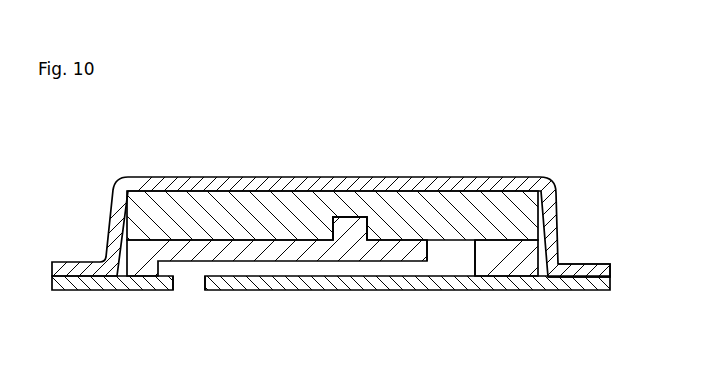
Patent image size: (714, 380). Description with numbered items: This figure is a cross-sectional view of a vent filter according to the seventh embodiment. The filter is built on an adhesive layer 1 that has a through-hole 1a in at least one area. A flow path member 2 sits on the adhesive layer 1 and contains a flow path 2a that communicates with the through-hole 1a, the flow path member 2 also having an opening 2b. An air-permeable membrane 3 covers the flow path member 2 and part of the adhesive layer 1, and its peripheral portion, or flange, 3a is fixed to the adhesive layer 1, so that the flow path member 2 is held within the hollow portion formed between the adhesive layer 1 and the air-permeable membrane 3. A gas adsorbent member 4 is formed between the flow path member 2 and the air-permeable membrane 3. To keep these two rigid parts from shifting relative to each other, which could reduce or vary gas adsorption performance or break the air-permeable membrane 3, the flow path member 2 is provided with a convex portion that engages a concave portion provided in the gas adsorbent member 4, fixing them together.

The adhesive layer 1 is at (93, 290).
The through-hole 1a is at (198, 284).
The flow path member 2 is at (141, 262).
The flow path 2a is at (368, 270).
The opening 2b is at (465, 248).
The air-permeable membrane 3 is at (413, 183).
The peripheral portion (flange) 3a is at (596, 264).
The gas adsorbent member 4 is at (167, 212).